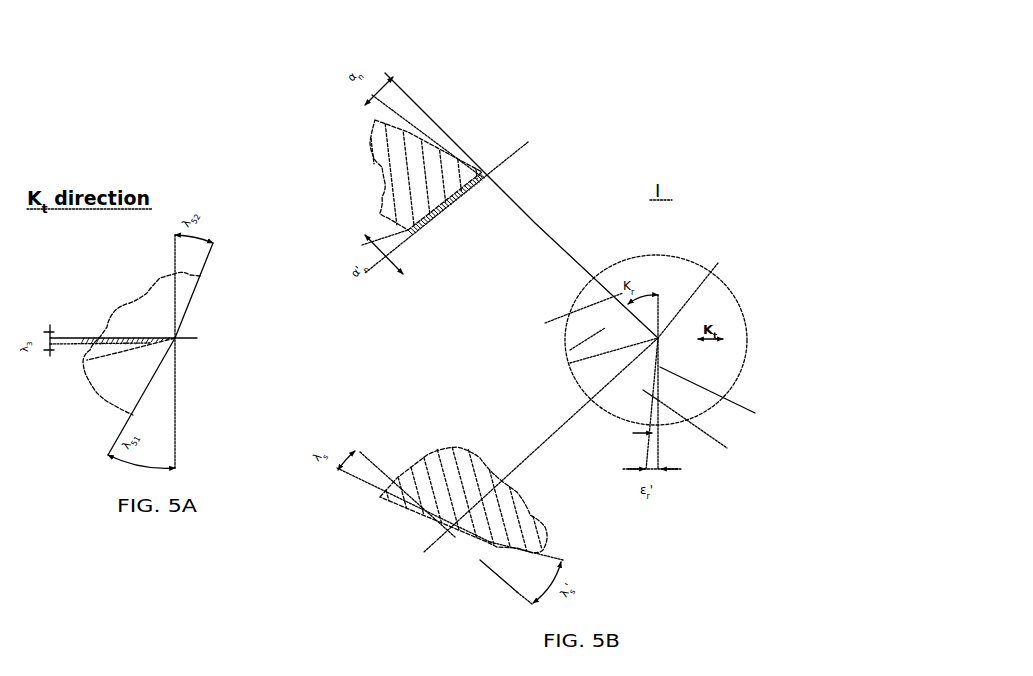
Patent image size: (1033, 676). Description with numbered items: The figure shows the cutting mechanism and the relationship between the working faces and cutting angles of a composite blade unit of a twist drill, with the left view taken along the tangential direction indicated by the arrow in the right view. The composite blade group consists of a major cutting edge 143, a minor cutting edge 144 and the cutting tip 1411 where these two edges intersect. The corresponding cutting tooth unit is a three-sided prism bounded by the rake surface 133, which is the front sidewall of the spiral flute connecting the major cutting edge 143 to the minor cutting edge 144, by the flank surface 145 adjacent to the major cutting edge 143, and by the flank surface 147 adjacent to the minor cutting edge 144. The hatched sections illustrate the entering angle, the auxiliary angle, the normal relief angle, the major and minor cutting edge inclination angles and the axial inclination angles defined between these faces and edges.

In FIG. 5B, the rake surface 133 is at (520, 243).
In FIG. 5A, the major cutting edge 143 is at (300, 298).
In FIG. 5B, the major cutting edge 143 is at (545, 323).
In FIG. 5A, the minor cutting edge 144 is at (300, 393).
In FIG. 5B, the minor cutting edge 144 is at (840, 413).
In FIG. 5B, the flank surface of the major cutting edge 145 is at (515, 102).
In FIG. 5B, the flank surface of the minor cutting edge 147 is at (880, 448).
In FIG. 5B, the cutting tip 1411 is at (762, 263).